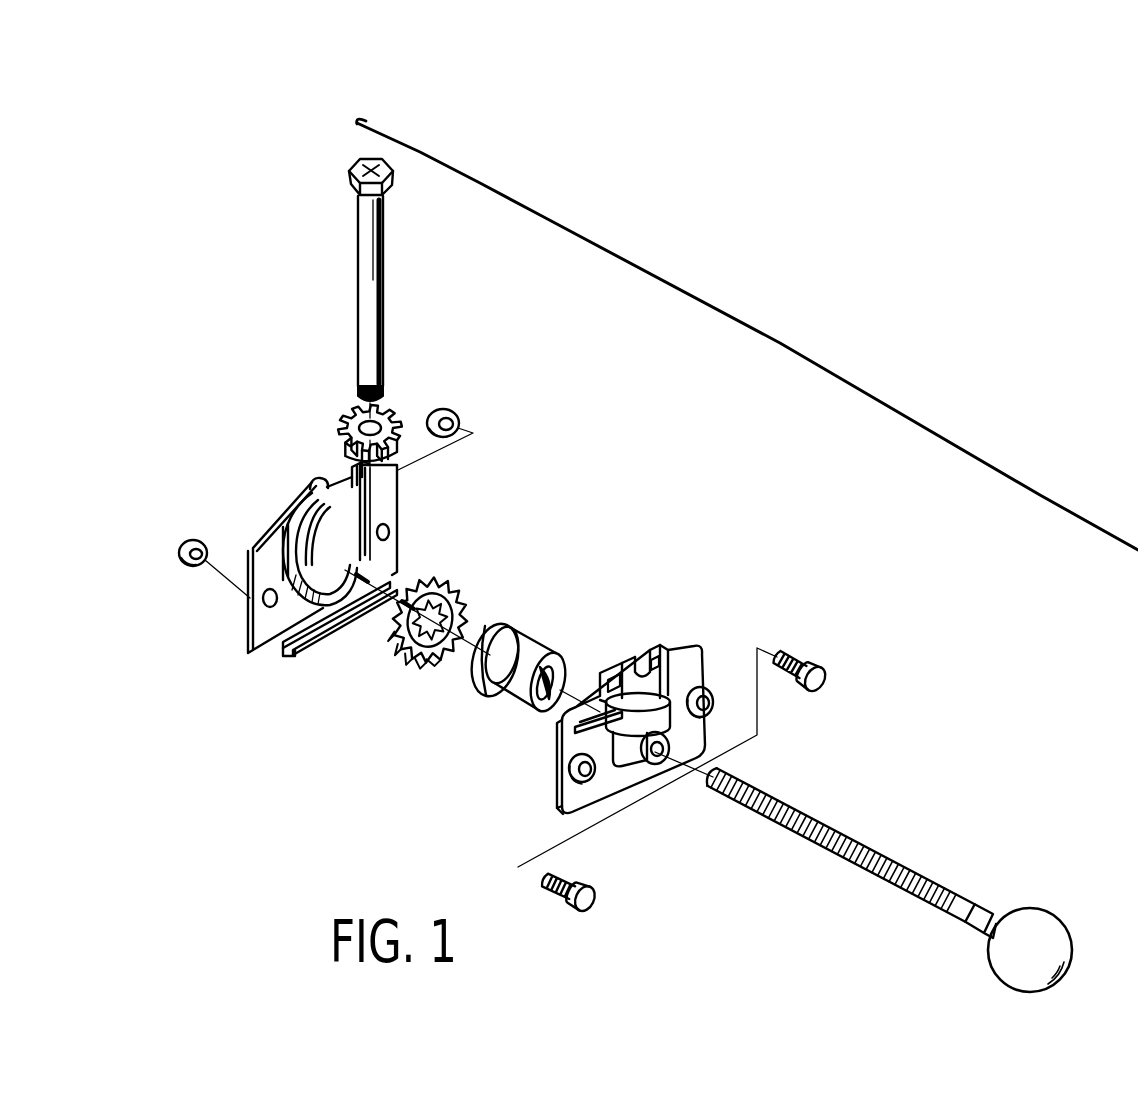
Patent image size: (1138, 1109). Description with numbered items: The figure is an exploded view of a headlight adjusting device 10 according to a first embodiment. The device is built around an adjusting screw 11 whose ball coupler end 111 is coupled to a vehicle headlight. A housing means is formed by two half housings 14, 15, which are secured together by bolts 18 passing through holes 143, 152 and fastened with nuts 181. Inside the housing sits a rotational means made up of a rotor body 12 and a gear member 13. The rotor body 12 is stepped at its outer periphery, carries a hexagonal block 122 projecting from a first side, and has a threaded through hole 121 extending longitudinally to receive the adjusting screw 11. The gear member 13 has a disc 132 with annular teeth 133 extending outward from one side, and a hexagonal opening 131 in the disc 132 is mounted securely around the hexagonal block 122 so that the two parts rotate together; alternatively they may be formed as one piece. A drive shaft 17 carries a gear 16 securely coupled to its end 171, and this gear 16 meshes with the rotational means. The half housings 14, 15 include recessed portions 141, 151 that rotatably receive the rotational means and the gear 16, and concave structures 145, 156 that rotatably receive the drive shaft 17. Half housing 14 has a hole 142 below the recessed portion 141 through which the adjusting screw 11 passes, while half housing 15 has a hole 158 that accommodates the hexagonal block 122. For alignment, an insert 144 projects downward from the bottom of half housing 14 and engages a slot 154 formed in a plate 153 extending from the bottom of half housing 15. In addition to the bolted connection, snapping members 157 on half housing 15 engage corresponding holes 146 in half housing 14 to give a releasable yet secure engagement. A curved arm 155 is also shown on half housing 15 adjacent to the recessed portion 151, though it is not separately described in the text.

The headlight adjusting device 10 is at (781, 348).
The adjusting screw 11 is at (904, 876).
The ball coupler end 111 is at (1056, 906).
The rotor body 12 is at (515, 672).
The threaded through hole 121 is at (540, 694).
The hexagonal block 122 is at (479, 669).
The gear member 13 is at (455, 618).
The hexagonal opening 131 is at (460, 608).
The disc 132 is at (438, 586).
The annular teeth 133 is at (412, 662).
The half housing 14 is at (647, 716).
The recessed portion 141 is at (663, 708).
The hole 142 is at (662, 768).
The hole 143 is at (710, 697).
The insert 144 is at (596, 800).
The concave structure 145 is at (612, 674).
The hole 146 is at (652, 656).
The half housing 15 is at (334, 541).
The recessed portion 151 is at (322, 590).
The hole 152 is at (390, 527).
The plate 153 is at (300, 646).
The slot 154 is at (340, 619).
The curved arm 155 is at (300, 508).
The concave structure 156 is at (320, 483).
The snapping member 157 is at (352, 497).
The hole 158 is at (264, 610).
The gear 16 is at (379, 414).
The drive shaft 17 is at (371, 288).
The end 171 is at (360, 393).
The bolt 18 is at (806, 661).
The nut 181 is at (453, 410).